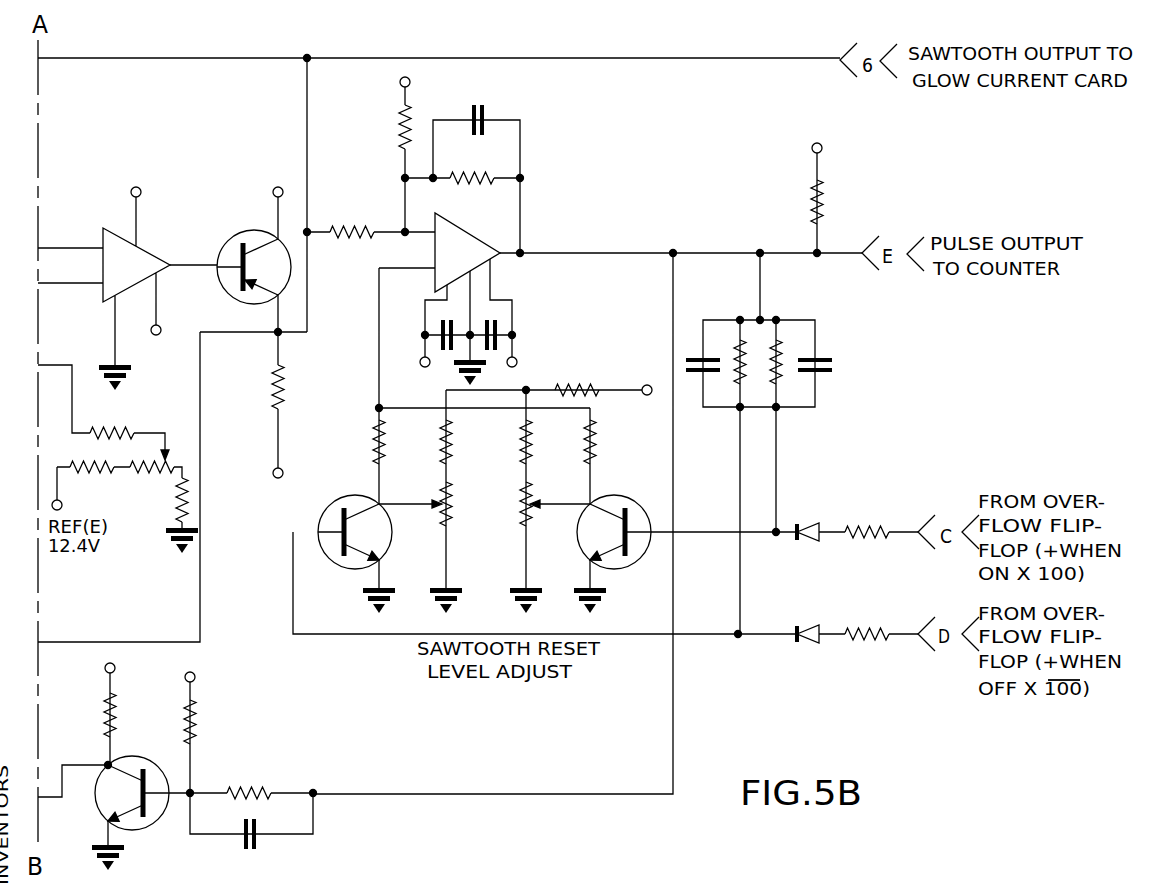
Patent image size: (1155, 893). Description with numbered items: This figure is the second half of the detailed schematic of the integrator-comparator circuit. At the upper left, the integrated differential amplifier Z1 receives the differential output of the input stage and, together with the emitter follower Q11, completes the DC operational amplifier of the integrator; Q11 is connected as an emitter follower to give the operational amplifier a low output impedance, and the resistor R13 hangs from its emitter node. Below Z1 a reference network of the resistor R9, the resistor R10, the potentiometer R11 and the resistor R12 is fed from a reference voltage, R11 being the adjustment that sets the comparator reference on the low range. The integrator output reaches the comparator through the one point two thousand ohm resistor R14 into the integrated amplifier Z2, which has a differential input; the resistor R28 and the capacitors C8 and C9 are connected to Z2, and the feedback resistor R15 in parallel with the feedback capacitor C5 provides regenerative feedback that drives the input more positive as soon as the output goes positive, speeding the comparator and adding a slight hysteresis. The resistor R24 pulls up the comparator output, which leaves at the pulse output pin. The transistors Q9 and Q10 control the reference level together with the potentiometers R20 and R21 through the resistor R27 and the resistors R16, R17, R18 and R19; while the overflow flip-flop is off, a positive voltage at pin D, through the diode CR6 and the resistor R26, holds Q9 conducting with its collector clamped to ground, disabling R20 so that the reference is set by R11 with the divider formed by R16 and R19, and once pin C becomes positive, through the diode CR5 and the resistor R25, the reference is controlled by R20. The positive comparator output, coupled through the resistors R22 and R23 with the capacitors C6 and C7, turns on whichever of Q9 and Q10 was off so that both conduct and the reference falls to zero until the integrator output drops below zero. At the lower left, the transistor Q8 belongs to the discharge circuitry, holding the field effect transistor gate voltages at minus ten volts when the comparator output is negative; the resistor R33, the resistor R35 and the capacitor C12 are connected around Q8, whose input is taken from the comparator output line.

The integrated differential amplifier Z1 is at (158, 255).
The emitter follower transistor Q11 is at (244, 238).
The resistor R9 is at (125, 428).
The resistor R10 is at (113, 474).
The potentiometer R11 is at (165, 474).
The resistor R12 is at (188, 500).
The resistor R13 is at (286, 386).
The resistor R14 is at (352, 224).
The resistor R28 is at (400, 126).
The feedback capacitor C5 is at (487, 110).
The feedback resistor R15 is at (470, 174).
The integrated amplifier Z2 is at (478, 238).
The capacitor C8 is at (430, 324).
The capacitor C9 is at (512, 324).
The resistor R27 is at (585, 384).
The divider resistor R16 is at (372, 444).
The resistor R17 is at (440, 444).
The resistor R18 is at (520, 444).
The divider resistor R19 is at (597, 444).
The potentiometer R20 is at (455, 504).
The potentiometer R21 is at (520, 510).
The transistor Q9 is at (342, 500).
The transistor Q10 is at (620, 496).
The resistor R24 is at (826, 202).
The resistor R22 is at (738, 352).
The resistor R23 is at (779, 352).
The capacitor C6 is at (696, 374).
The capacitor C7 is at (820, 360).
The diode CR5 is at (805, 523).
The resistor R25 is at (872, 527).
The diode CR6 is at (806, 645).
The resistor R26 is at (860, 629).
The resistor R33 is at (107, 712).
The transistor Q8 is at (152, 757).
The resistor R35 is at (247, 786).
The capacitor C12 is at (240, 845).